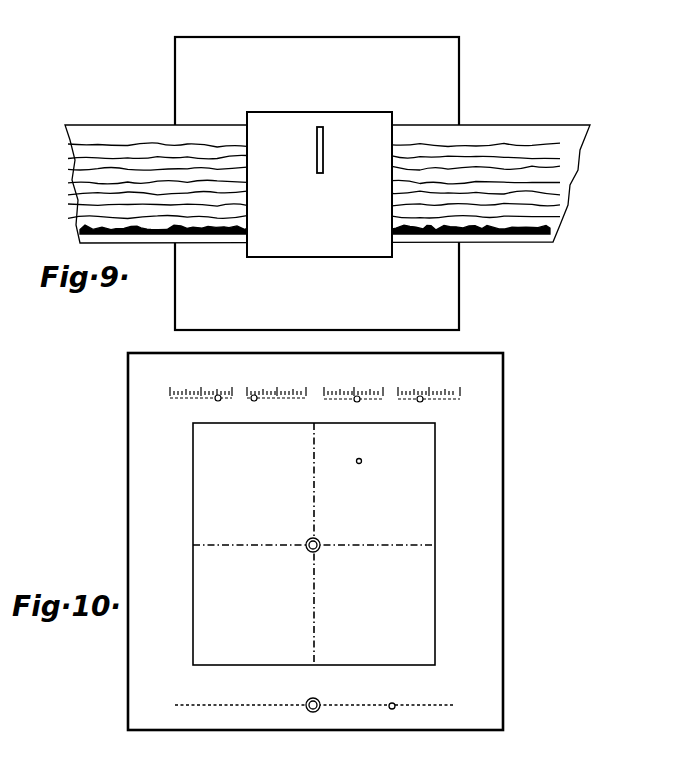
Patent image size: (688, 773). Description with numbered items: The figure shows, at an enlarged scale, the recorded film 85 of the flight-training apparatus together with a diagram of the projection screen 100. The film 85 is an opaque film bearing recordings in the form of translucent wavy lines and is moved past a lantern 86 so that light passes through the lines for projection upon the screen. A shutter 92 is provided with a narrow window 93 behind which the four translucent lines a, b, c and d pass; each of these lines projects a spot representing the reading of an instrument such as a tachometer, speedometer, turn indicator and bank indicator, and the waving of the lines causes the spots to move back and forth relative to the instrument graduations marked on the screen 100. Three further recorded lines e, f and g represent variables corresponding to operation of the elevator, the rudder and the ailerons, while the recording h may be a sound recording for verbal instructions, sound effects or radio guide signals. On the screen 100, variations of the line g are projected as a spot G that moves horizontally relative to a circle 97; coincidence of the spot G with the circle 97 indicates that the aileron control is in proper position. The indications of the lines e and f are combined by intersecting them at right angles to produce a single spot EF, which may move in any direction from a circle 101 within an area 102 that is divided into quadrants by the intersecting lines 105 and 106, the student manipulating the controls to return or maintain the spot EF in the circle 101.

In FIG. 9, the film 85 is at (352, 169).
In FIG. 9, the lantern 86 is at (443, 98).
In FIG. 9, the shutter 92 is at (385, 106).
In FIG. 9, the narrow window 93 is at (320, 148).
In FIG. 9, the translucent line a is at (560, 143).
In FIG. 9, the translucent line b is at (560, 159).
In FIG. 9, the translucent line c is at (560, 166).
In FIG. 9, the translucent line d is at (560, 182).
In FIG. 9, the recorded line e is at (560, 195).
In FIG. 9, the recorded line f is at (560, 205).
In FIG. 9, the recorded line g is at (560, 217).
In FIG. 9, the recording h is at (550, 232).
In FIG. 10, the screen 100 is at (487, 452).
In FIG. 10, the area 102 is at (420, 511).
In FIG. 10, the line 105 is at (314, 528).
In FIG. 10, the line 106 is at (415, 548).
In FIG. 10, the circle 101 is at (312, 553).
In FIG. 10, the spot EF is at (362, 461).
In FIG. 10, the circle 97 is at (313, 713).
In FIG. 10, the spot G is at (392, 710).